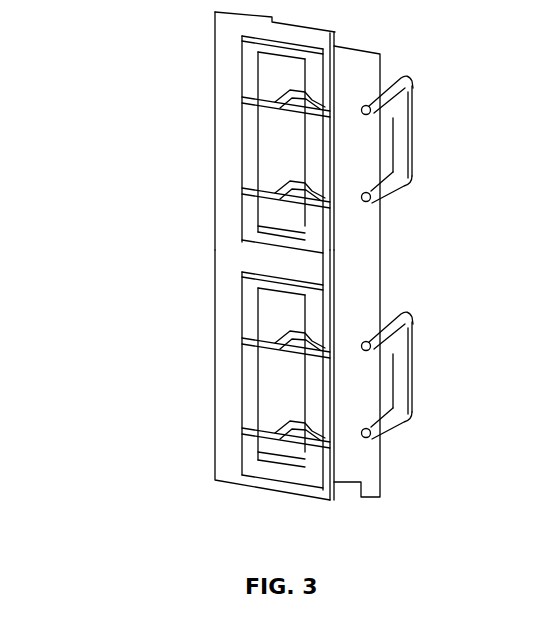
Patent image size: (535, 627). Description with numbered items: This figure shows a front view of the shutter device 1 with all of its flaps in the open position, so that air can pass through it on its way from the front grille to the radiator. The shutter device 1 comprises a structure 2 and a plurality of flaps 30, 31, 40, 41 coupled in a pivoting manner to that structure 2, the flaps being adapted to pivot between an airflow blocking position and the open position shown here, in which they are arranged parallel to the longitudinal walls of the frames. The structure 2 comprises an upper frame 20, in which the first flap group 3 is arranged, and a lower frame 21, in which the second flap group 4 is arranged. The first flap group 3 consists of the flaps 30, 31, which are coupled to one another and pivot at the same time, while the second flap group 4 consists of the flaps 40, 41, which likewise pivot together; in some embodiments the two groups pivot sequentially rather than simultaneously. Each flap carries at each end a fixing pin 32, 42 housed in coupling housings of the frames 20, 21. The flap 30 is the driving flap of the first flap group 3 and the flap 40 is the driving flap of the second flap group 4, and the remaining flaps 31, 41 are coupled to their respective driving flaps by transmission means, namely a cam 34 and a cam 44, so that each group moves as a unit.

The shutter device 1 is at (128, 126).
The structure 2 is at (363, 75).
The first flap group 3 is at (248, 130).
The second flap group 4 is at (254, 365).
The upper frame 20 is at (237, 222).
The lower frame 21 is at (240, 460).
The flap 30 is at (290, 200).
The flap 31 is at (290, 110).
The fixing pin 32 is at (395, 200).
The cam 34 is at (403, 137).
The flap 40 is at (290, 345).
The flap 41 is at (290, 433).
The fixing pin 42 is at (388, 318).
The cam 44 is at (400, 383).